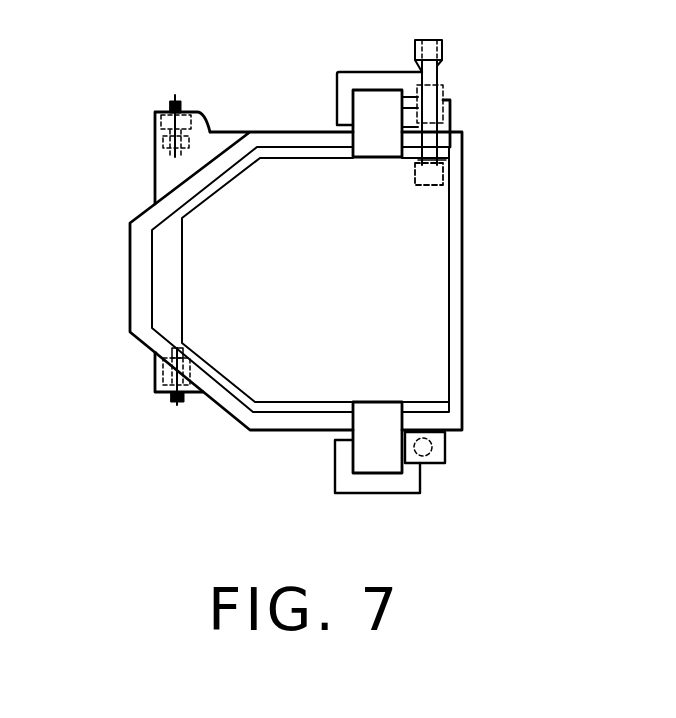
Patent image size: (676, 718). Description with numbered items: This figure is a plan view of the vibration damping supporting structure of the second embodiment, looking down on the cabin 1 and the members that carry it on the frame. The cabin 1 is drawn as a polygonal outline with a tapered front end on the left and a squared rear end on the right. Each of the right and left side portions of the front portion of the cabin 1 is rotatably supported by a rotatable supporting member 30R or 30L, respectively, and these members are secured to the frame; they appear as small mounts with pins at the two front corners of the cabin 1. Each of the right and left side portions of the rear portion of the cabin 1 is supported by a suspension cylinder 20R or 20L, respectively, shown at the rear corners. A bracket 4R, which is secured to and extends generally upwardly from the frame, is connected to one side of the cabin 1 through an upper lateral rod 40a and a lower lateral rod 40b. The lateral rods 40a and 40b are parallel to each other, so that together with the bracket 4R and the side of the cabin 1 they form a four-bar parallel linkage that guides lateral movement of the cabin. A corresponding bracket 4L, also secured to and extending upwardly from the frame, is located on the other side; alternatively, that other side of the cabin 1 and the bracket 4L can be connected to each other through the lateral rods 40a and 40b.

The cabin 1 is at (223, 407).
The bracket 4R is at (382, 90).
The bracket 4L is at (382, 463).
The upper lateral rod 40a is at (423, 100).
The lower lateral rod 40b is at (437, 172).
The suspension cylinder 20R is at (450, 112).
The suspension cylinder 20L is at (437, 447).
The rotatable supporting member 30R is at (153, 130).
The rotatable supporting member 30L is at (155, 375).